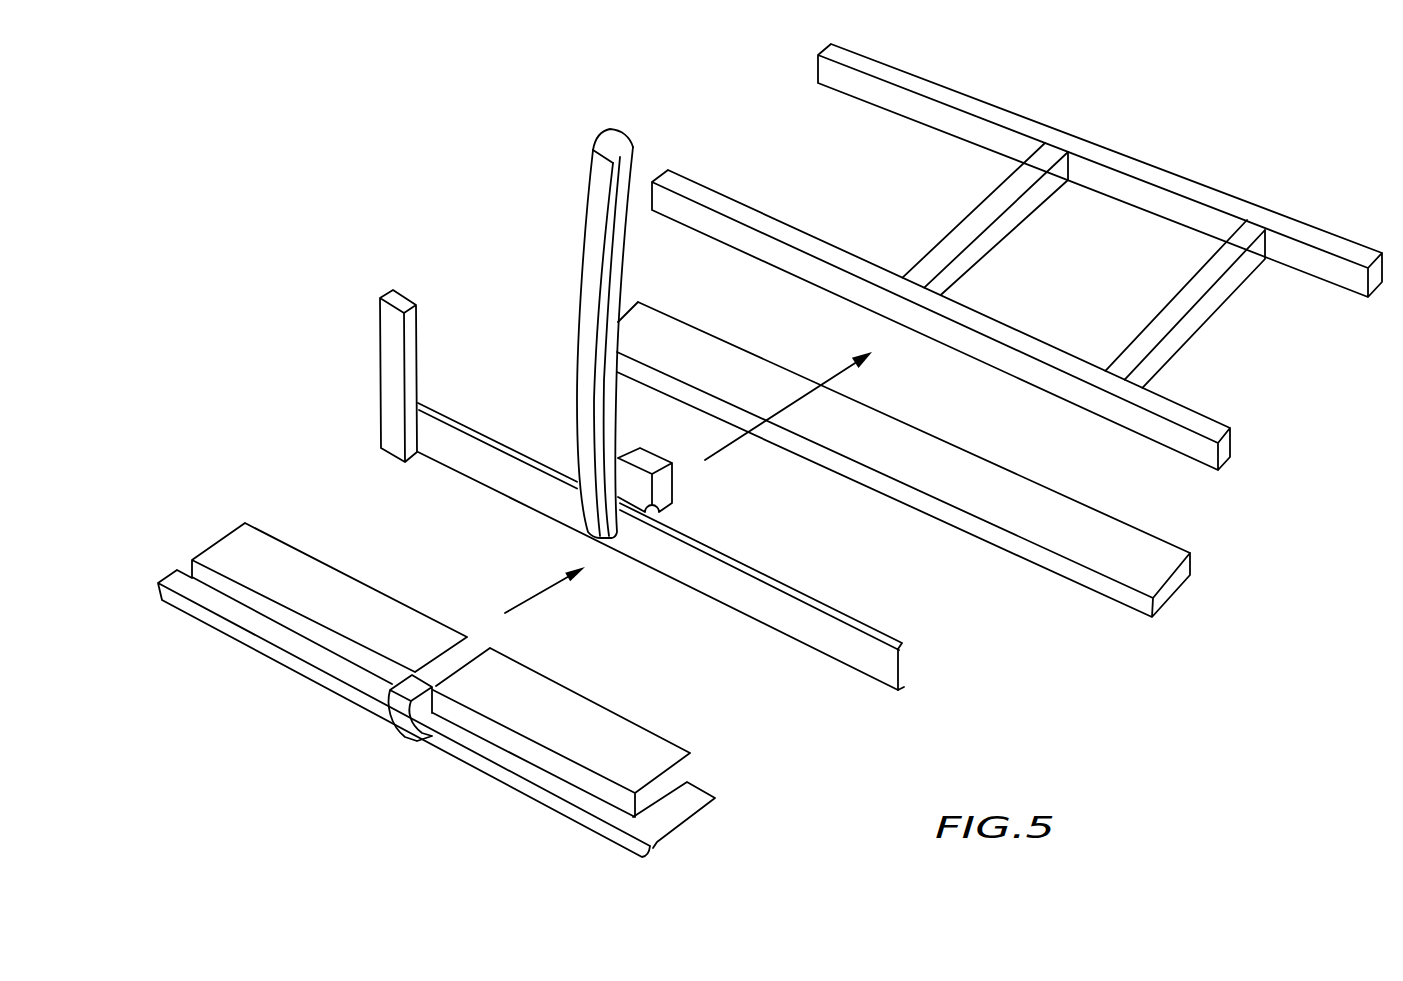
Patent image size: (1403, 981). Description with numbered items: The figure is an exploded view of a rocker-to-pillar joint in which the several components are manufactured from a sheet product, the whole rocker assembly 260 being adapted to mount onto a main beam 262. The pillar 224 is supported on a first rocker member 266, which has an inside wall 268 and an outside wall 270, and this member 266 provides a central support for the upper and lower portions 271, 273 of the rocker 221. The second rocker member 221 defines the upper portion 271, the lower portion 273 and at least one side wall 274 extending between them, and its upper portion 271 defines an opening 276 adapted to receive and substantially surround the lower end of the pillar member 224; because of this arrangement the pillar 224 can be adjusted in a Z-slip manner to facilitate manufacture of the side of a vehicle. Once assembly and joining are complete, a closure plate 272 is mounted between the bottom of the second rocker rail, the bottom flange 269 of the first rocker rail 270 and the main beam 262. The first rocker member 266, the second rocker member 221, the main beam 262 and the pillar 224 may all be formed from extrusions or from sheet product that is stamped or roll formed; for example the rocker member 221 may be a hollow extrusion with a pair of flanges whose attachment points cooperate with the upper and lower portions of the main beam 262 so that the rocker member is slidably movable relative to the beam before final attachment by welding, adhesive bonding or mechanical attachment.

The second rocker member 221 is at (452, 706).
The pillar 224 is at (617, 283).
The rocker assembly 260 is at (1017, 380).
The main beam 262 is at (1135, 418).
The first rocker member 266 is at (773, 600).
The inside wall 268 is at (847, 615).
The bottom flange 269 is at (890, 697).
The outside wall 270 is at (672, 583).
The upper portion 271 is at (620, 728).
The closure plate 272 is at (1177, 582).
The lower portion 273 is at (690, 823).
The side wall 274 is at (632, 830).
The opening 276 is at (467, 645).